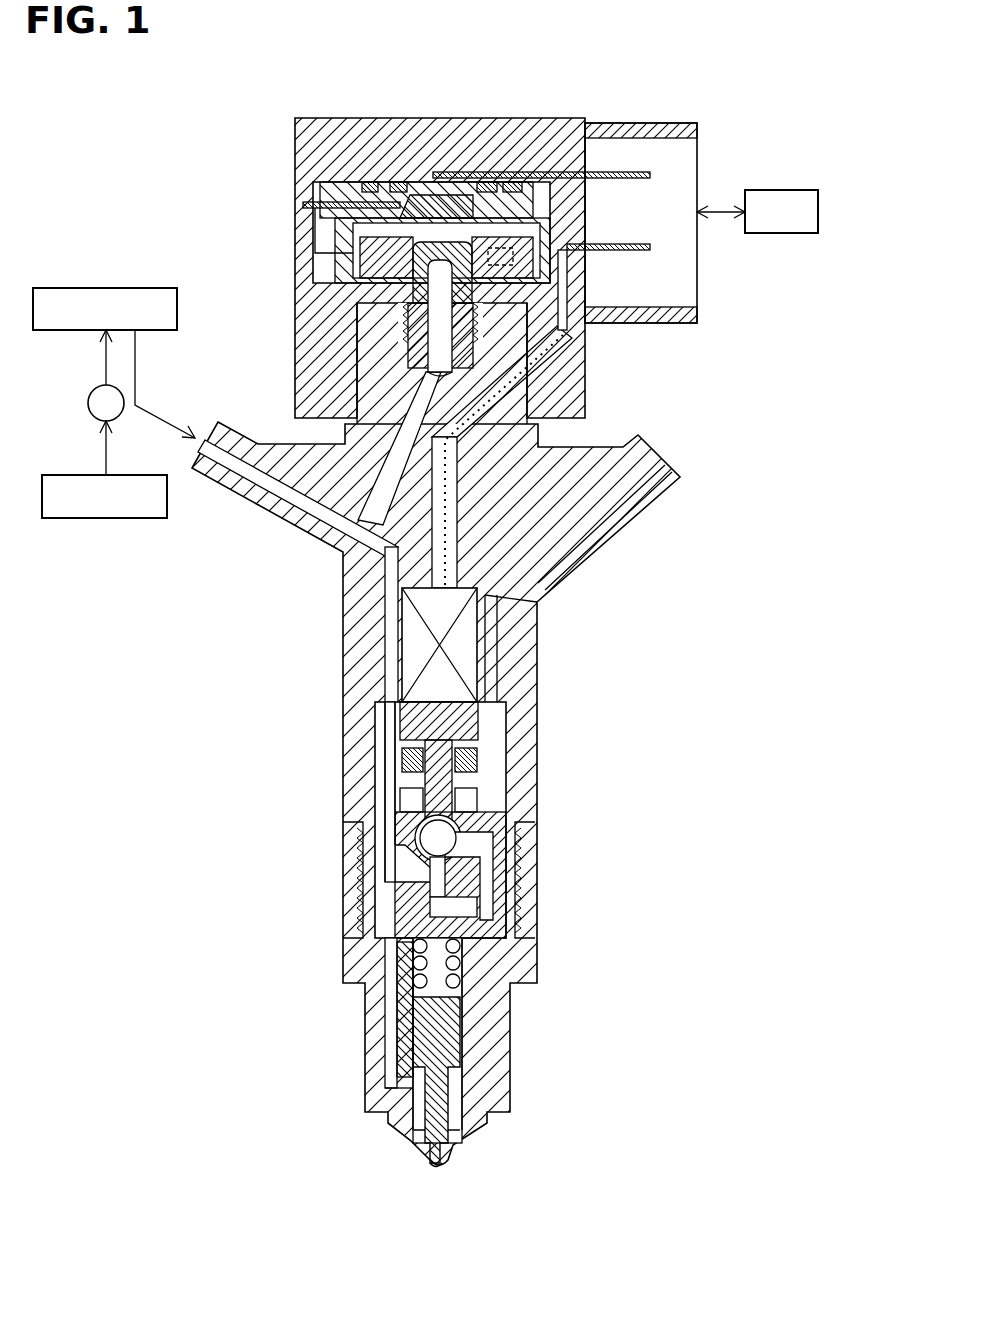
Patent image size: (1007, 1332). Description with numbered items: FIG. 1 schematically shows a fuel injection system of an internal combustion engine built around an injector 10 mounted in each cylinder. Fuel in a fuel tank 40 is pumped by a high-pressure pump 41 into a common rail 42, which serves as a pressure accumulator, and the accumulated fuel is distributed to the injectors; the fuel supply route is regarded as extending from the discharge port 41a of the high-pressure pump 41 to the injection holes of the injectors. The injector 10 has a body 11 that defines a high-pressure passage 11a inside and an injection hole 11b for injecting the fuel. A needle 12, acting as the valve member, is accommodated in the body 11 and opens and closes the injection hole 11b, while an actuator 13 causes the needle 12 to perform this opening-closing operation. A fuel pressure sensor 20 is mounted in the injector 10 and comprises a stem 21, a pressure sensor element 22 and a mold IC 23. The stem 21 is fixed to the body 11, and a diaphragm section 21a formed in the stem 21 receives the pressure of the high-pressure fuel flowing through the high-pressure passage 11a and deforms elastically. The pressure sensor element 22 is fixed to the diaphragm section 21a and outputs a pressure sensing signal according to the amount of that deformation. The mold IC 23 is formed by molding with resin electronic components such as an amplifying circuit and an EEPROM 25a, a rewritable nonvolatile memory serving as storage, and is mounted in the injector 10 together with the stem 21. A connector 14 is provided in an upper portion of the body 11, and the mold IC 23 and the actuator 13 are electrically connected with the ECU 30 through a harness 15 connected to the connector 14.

The injector 10 is at (267, 188).
The body 11 is at (353, 622).
The high-pressure passage 11a is at (275, 485).
The injection hole 11b is at (446, 1163).
The needle 12 is at (450, 1037).
The actuator 13 is at (418, 662).
The connector 14 is at (727, 127).
The harness 15 is at (722, 216).
The fuel pressure sensor 20 is at (395, 337).
The stem 21 is at (413, 313).
The diaphragm section 21a is at (455, 327).
The pressure sensor element 22 is at (440, 245).
The mold IC 23 is at (535, 230).
The EEPROM 25a is at (497, 132).
The ECU 30 is at (773, 190).
The fuel tank 40 is at (108, 518).
The high-pressure pump 41 is at (88, 403).
The discharge port 41a is at (104, 387).
The common rail 42 is at (108, 288).